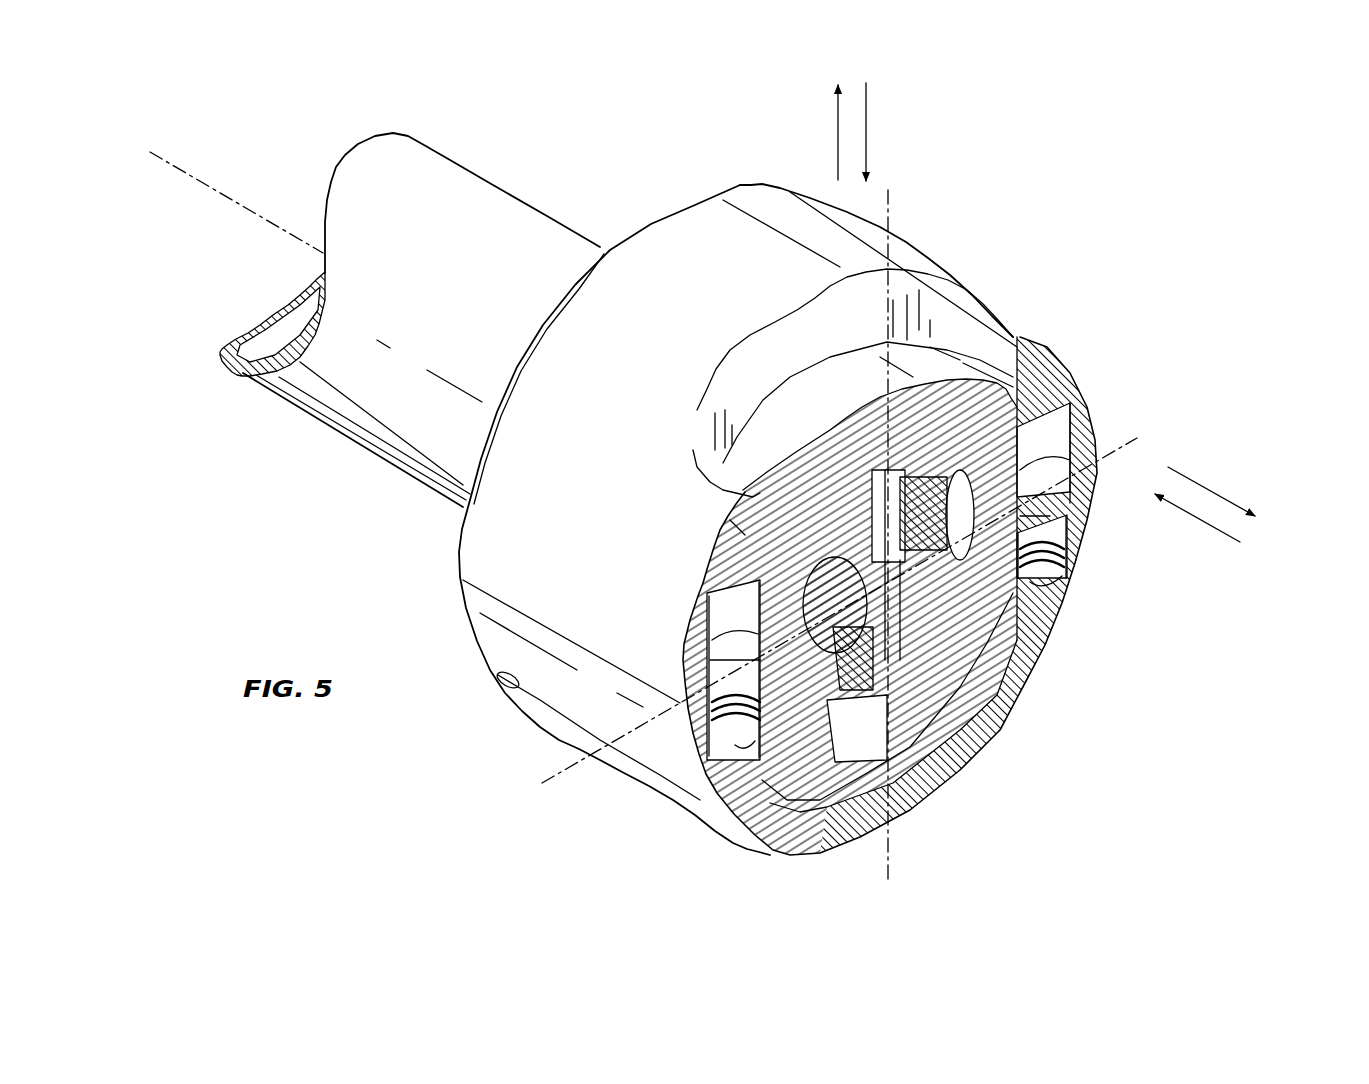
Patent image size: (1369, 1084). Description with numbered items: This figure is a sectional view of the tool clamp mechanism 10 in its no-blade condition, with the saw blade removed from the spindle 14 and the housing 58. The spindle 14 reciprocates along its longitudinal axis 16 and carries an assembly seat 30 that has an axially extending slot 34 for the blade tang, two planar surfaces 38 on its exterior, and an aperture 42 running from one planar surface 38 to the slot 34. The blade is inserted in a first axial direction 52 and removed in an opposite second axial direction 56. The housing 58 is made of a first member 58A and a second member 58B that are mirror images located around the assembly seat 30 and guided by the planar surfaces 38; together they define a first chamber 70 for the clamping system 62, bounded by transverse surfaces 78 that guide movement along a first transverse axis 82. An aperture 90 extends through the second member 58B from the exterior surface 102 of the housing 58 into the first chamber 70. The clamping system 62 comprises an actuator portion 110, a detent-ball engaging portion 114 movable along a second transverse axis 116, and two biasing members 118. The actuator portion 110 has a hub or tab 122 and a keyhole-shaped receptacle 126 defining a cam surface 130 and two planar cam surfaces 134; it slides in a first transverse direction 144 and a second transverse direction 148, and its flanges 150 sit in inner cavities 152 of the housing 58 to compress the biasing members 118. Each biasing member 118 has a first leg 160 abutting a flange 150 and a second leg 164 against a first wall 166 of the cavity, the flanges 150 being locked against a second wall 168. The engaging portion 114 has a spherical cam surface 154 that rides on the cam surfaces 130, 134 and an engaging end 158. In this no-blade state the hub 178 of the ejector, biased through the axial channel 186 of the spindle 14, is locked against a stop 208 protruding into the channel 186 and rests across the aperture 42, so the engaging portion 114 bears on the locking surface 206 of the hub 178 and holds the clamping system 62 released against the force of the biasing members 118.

The tool clamp mechanism 10 is at (1122, 188).
The spindle 14 is at (463, 197).
The longitudinal axis 16 is at (242, 208).
The assembly seat 30 is at (934, 722).
The slot 34 is at (943, 311).
The planar surfaces 38 is at (975, 597).
The aperture 42 is at (753, 833).
The first axial direction 52 is at (1213, 490).
The second axial direction 56 is at (1208, 530).
The housing 58 is at (698, 200).
The first member 58A is at (488, 640).
The second member 58B is at (760, 197).
The clamping system 62 is at (943, 720).
The first chamber 70 is at (850, 802).
The transverse surfaces 78 is at (748, 488).
The first transverse axis 82 is at (890, 220).
The aperture 90 is at (927, 380).
The exterior surface 102 is at (488, 535).
The actuator portion 110 is at (837, 383).
The engaging portion 114 is at (745, 493).
The second transverse axis 116 is at (573, 763).
The biasing members 118 is at (1049, 537).
The hub or tab 122 is at (977, 370).
The receptacle 126 is at (899, 717).
The cam surface 130 is at (1030, 423).
The planar cam surfaces 134 is at (937, 645).
The first transverse direction 144 is at (835, 115).
The second transverse direction 148 is at (867, 130).
The flanges 150 is at (1035, 477).
The inner cavities 152 is at (1042, 435).
The cam surface 154 is at (738, 528).
The engaging end 158 is at (828, 560).
The first leg 160 is at (1067, 517).
The second leg 164 is at (1053, 562).
The first wall 166 is at (1050, 578).
The second wall 168 is at (1088, 416).
The hub 178 is at (900, 490).
The axial channel 186 is at (943, 680).
The locking surface 206 is at (777, 470).
The stop 208 is at (905, 603).